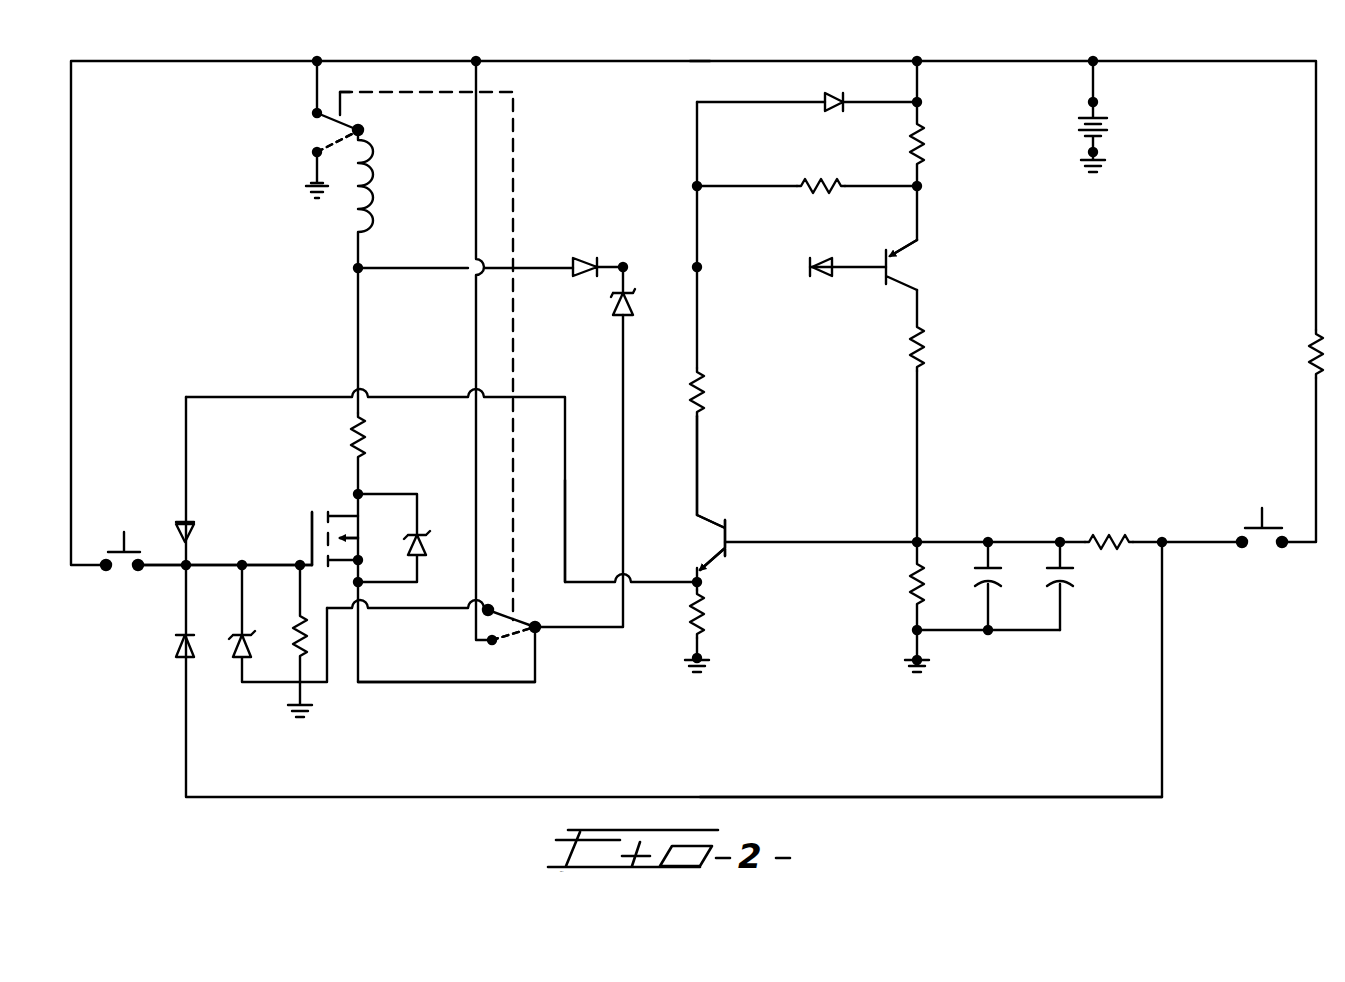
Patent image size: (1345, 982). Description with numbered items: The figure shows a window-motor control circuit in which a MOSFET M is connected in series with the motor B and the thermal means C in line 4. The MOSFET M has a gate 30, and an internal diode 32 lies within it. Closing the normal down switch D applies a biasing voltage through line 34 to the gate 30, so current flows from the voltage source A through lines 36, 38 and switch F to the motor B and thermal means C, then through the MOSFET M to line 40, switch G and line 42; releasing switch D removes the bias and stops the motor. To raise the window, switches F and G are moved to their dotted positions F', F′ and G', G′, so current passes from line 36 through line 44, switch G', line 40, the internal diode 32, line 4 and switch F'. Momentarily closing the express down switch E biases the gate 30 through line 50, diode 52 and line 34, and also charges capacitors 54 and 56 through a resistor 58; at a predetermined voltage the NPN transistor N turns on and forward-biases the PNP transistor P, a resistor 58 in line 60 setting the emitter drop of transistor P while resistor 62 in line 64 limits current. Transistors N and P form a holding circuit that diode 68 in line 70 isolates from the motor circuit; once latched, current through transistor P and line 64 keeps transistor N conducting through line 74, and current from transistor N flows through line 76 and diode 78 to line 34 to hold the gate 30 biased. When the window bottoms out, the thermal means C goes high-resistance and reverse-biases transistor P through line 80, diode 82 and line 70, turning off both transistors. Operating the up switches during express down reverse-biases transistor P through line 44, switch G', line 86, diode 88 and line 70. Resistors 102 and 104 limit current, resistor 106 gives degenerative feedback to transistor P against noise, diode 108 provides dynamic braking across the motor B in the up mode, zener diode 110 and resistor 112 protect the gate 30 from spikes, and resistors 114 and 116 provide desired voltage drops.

The line 36 is at (700, 61).
The line 38 is at (317, 78).
The switch F is at (384, 110).
The dotted line position of switch F F' is at (296, 139).
The dotted line position of switch F F′ is at (322, 133).
The motor B is at (368, 205).
The line 44 is at (478, 178).
The line 80 is at (455, 267).
The line 4 is at (358, 326).
The line 76 is at (565, 515).
The diode 82 is at (585, 258).
The diode 88 is at (611, 310).
The line 86 is at (623, 418).
The resistor 58 is at (1112, 505).
The line 60 is at (697, 445).
The NPN transistor N is at (738, 520).
The resistor 114 is at (703, 625).
The line 74 is at (862, 542).
The dynamic braking diode 108 is at (835, 111).
The degenerative feedback resistor 106 is at (810, 186).
The current-limiting resistor 102 is at (920, 140).
The PNP transistor P is at (876, 250).
The line 70 is at (800, 262).
The diode 68 is at (822, 280).
The voltage source A is at (1120, 143).
The current-limiting resistor 104 is at (1316, 355).
The resistor 62 is at (920, 345).
The line 64 is at (917, 448).
The resistor 116 is at (910, 605).
The capacitor 54 is at (992, 584).
The capacitor 56 is at (1068, 590).
The automatic or express down switch E is at (1250, 528).
The line 50 is at (797, 797).
The normal down switch D is at (106, 545).
The diode 78 is at (190, 525).
The line 34 is at (218, 562).
The diode 52 is at (174, 650).
The zener diode 110 is at (245, 632).
The resistor 112 is at (295, 650).
The gate 30 is at (312, 536).
The MOSFET M is at (378, 480).
The thermal means C is at (375, 432).
The internal diode 32 is at (420, 545).
The line 42 is at (430, 610).
The switch G is at (517, 596).
The dotted line position of switch G G' is at (479, 650).
The dotted line position of switch G G′ is at (512, 635).
The line 40 is at (478, 682).